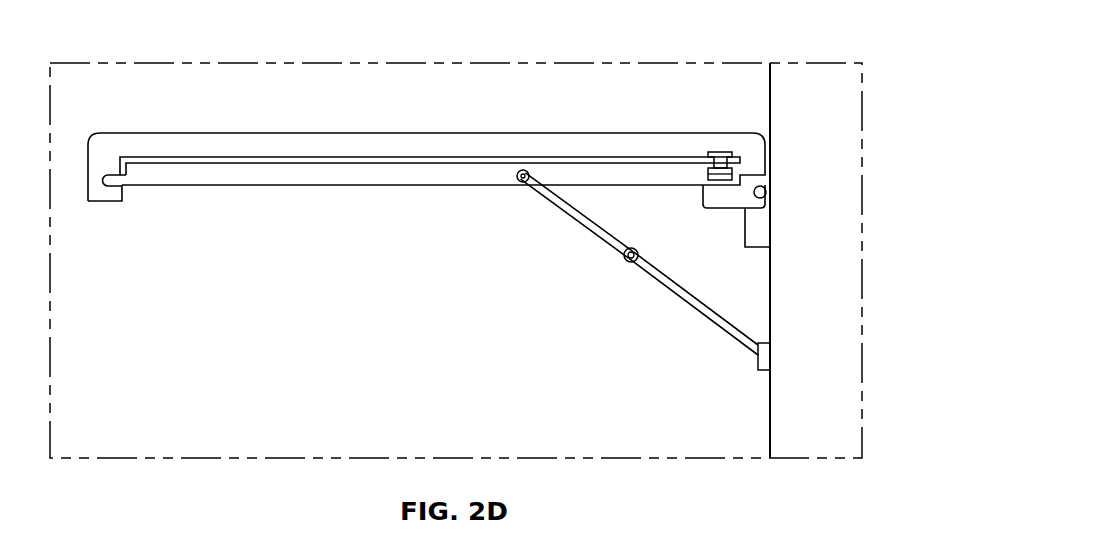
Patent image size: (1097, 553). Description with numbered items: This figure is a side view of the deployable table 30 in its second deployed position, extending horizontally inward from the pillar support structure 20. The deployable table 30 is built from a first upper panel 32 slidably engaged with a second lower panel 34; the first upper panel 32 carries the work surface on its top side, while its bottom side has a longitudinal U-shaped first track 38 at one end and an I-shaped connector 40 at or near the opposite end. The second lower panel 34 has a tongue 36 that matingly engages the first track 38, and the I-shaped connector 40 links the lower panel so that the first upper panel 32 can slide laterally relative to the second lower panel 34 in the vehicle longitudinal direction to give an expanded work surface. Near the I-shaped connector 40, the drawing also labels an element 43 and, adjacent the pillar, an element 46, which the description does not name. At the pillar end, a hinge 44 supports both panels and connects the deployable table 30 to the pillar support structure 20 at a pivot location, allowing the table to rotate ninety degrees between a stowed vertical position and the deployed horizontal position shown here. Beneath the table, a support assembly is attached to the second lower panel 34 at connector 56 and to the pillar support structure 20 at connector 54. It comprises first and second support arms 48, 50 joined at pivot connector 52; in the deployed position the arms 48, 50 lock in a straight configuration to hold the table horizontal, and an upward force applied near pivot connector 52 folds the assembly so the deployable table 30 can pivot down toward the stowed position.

The pillar support structure 20 is at (770, 98).
The deployable table 30 is at (250, 100).
The first upper panel 32 is at (420, 147).
The second lower panel 34 is at (465, 177).
The tongue 36 is at (113, 176).
The first track 38 is at (109, 186).
The I-shaped connector 40 is at (720, 155).
The fastener base 43 is at (730, 168).
The hinge 44 is at (766, 192).
The bracket 46 is at (692, 264).
The first support arm 48 is at (594, 222).
The second support arm 50 is at (700, 303).
The pivot connector 52 is at (628, 262).
The connector 54 is at (765, 357).
The connector 56 is at (523, 170).